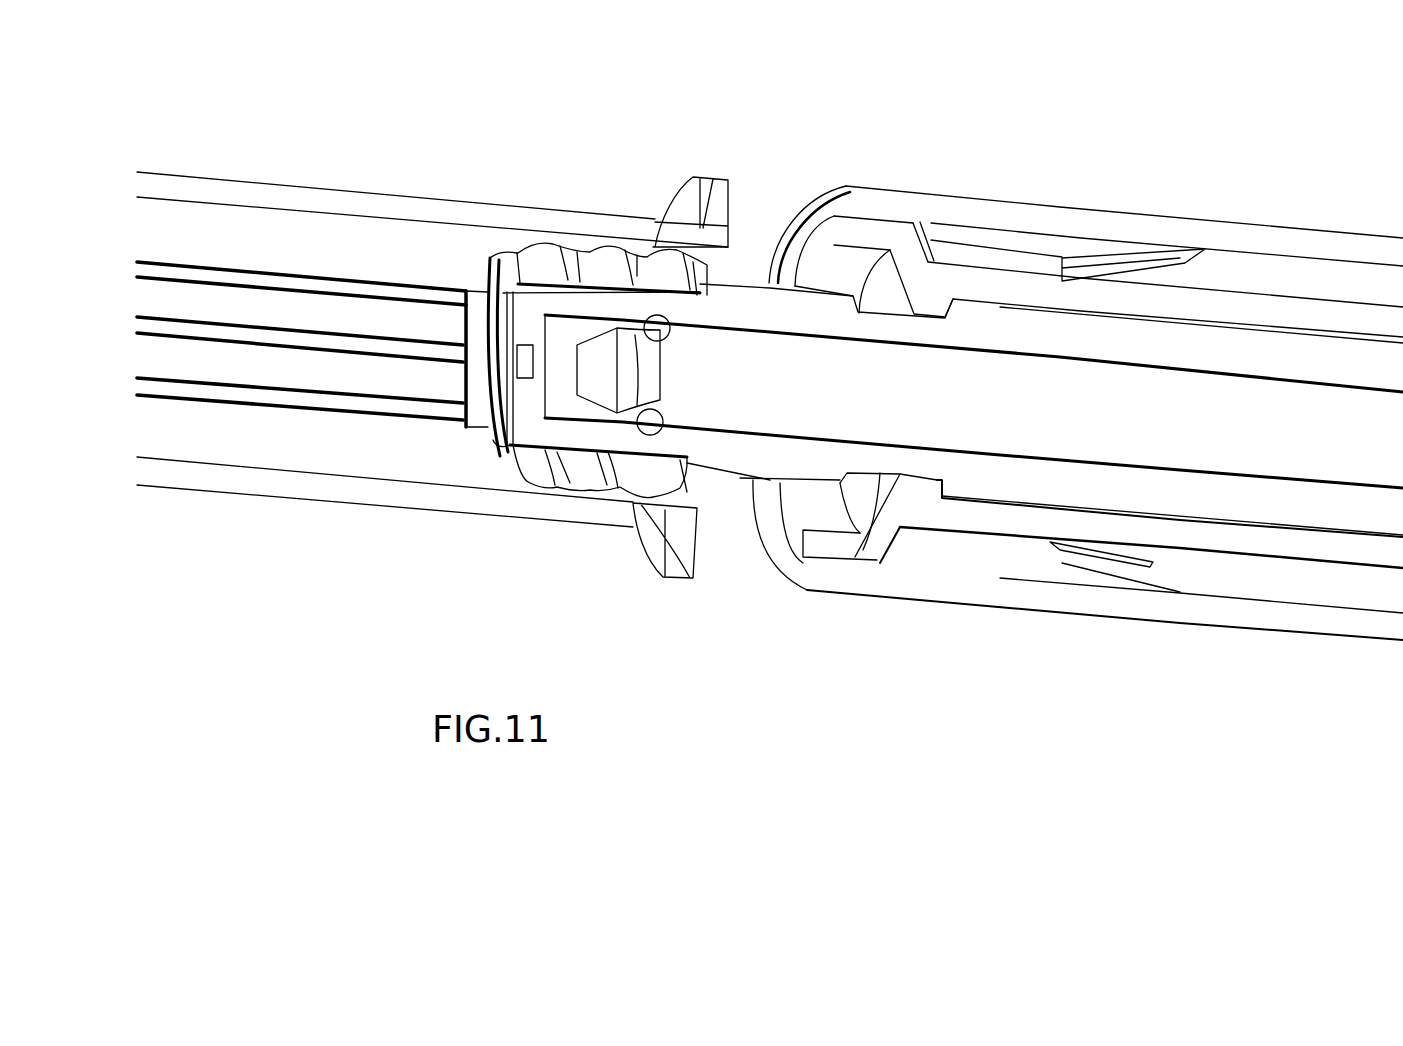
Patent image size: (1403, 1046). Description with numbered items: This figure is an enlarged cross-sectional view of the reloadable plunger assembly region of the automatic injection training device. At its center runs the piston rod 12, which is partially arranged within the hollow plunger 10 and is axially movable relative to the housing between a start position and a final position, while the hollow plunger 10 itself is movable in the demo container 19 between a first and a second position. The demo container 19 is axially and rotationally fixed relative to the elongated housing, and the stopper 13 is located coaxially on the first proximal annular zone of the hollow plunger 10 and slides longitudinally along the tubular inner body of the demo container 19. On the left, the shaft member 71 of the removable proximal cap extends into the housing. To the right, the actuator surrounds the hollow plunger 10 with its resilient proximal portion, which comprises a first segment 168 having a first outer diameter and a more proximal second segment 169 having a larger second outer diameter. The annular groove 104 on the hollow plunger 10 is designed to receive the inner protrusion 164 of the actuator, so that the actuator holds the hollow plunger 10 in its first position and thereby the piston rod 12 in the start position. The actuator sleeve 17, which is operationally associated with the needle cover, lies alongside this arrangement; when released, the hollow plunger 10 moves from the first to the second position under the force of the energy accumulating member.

The hollow plunger 10 is at (1187, 347).
The piston rod 12 is at (922, 405).
The stopper 13 is at (652, 276).
The actuator sleeve 17 is at (1160, 603).
The demo container 19 is at (375, 495).
The shaft member 71 is at (327, 316).
The annular groove 104 is at (858, 553).
The inner protrusion 164 is at (918, 493).
The first segment 168 is at (1060, 287).
The second segment 169 is at (868, 236).